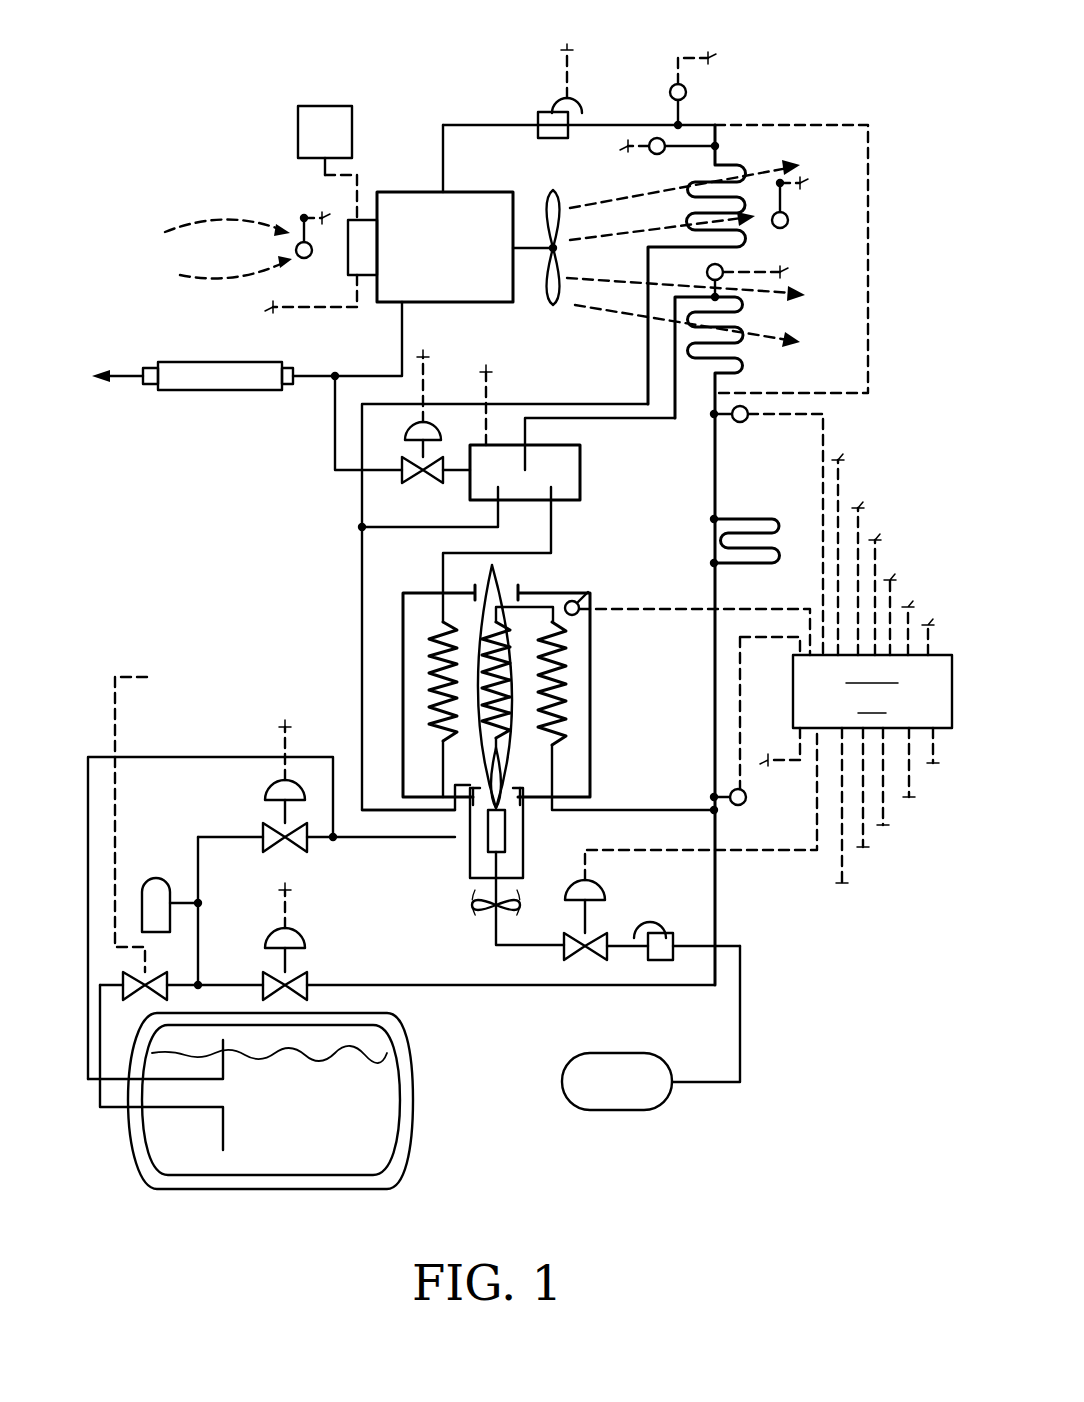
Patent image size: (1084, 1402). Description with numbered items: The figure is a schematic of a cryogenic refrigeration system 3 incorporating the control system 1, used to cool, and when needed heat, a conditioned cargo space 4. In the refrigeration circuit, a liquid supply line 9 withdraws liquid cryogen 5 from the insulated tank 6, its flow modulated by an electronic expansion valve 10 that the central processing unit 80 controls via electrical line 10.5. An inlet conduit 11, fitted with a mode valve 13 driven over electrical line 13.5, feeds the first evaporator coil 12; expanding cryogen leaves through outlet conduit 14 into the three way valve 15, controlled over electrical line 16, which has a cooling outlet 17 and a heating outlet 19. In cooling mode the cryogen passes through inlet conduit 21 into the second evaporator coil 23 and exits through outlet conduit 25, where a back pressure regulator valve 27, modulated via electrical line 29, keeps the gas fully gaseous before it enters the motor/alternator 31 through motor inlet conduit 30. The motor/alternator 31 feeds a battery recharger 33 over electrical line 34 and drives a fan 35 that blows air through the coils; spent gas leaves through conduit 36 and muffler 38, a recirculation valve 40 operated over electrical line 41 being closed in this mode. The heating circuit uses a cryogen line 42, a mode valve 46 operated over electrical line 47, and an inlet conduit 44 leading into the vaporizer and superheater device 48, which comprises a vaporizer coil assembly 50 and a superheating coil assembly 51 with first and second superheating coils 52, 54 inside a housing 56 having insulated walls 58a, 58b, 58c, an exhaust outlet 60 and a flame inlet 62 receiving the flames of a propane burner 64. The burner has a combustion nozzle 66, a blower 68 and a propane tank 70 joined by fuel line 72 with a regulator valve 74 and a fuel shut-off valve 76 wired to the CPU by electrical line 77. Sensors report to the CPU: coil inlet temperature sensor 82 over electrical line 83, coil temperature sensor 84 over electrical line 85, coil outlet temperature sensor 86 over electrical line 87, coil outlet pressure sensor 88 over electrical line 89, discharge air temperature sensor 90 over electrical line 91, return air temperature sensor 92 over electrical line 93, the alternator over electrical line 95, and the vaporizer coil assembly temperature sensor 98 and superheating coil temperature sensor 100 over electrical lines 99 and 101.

The control system 1 is at (918, 500).
The cryogenic refrigeration system 3 is at (255, 250).
The conditioned cargo space 4 is at (850, 298).
The liquid cryogen 5 is at (292, 1160).
The insulated tank 6 is at (420, 1080).
The liquid supply line 9 is at (138, 1120).
The electronic expansion valve 10 is at (148, 978).
The electrical line 10.5 is at (116, 803).
The inlet conduit 11 is at (415, 980).
The first evaporator coil 12 is at (733, 320).
The mode valve 13 is at (265, 948).
The electrical line 13.5 is at (290, 915).
The outlet conduit 14 is at (683, 400).
The three way valve 15 is at (510, 440).
The electrical line 16 is at (483, 392).
The cooling outlet 17 is at (415, 535).
The heating outlet 19 is at (550, 530).
The inlet conduit 21 is at (400, 404).
The second evaporator coil 23 is at (728, 190).
The outlet conduit 25 is at (618, 125).
The back pressure regulator valve 27 is at (538, 135).
The electrical line 29 is at (563, 72).
The motor inlet conduit 30 is at (441, 127).
The motor/alternator 31 is at (430, 247).
The battery recharger 33 is at (312, 147).
The electrical line 34 is at (358, 170).
The fan 35 is at (548, 195).
The conduit 36 is at (402, 352).
The muffler 38 is at (230, 362).
The recirculation valve 40 is at (406, 435).
The electrical line 41 is at (425, 380).
The cryogen line 42 is at (200, 925).
The inlet conduit 44 is at (385, 845).
The mode valve 46 is at (265, 790).
The electrical line 47 is at (282, 740).
The vaporizer and superheater device 48 is at (400, 578).
The vaporizer coil assembly 50 is at (490, 596).
The superheating coil assembly 51 is at (525, 760).
The first superheating coil 52 is at (572, 665).
The second superheating coil 54 is at (428, 728).
The housing 56 is at (395, 612).
The side insulated wall 58a is at (592, 705).
The upper insulated wall 58b is at (525, 593).
The bottom insulated wall 58c is at (450, 805).
The exhaust outlet 60 is at (505, 585).
The flame inlet 62 is at (523, 830).
The propane burner 64 is at (455, 880).
The combustion nozzle 66 is at (510, 845).
The blower 68 is at (480, 910).
The propane tank 70 is at (603, 1096).
The fuel line 72 is at (738, 990).
The regulator valve 74 is at (668, 933).
The fuel shut-off valve 76 is at (594, 908).
The electrical line 77 is at (768, 848).
The central processing unit 80 is at (872, 691).
The coil inlet temperature sensor 82 is at (745, 425).
The electrical line 83 is at (823, 470).
The coil temperature sensor 84 is at (706, 270).
The electrical line 85 is at (735, 276).
The coil outlet temperature sensor 86 is at (656, 154).
The electrical line 87 is at (622, 152).
The coil outlet pressure sensor 88 is at (686, 92).
The electrical line 89 is at (712, 56).
The discharge air temperature sensor 90 is at (792, 226).
The electrical line 91 is at (805, 192).
The return air temperature sensor 92 is at (312, 258).
The electrical line 93 is at (310, 212).
The electrical line 95 is at (312, 308).
The vaporizer coil assembly temperature sensor 98 is at (585, 596).
The electrical line 99 is at (725, 612).
The superheating coil temperature sensor 100 is at (745, 805).
The electrical line 101 is at (740, 680).